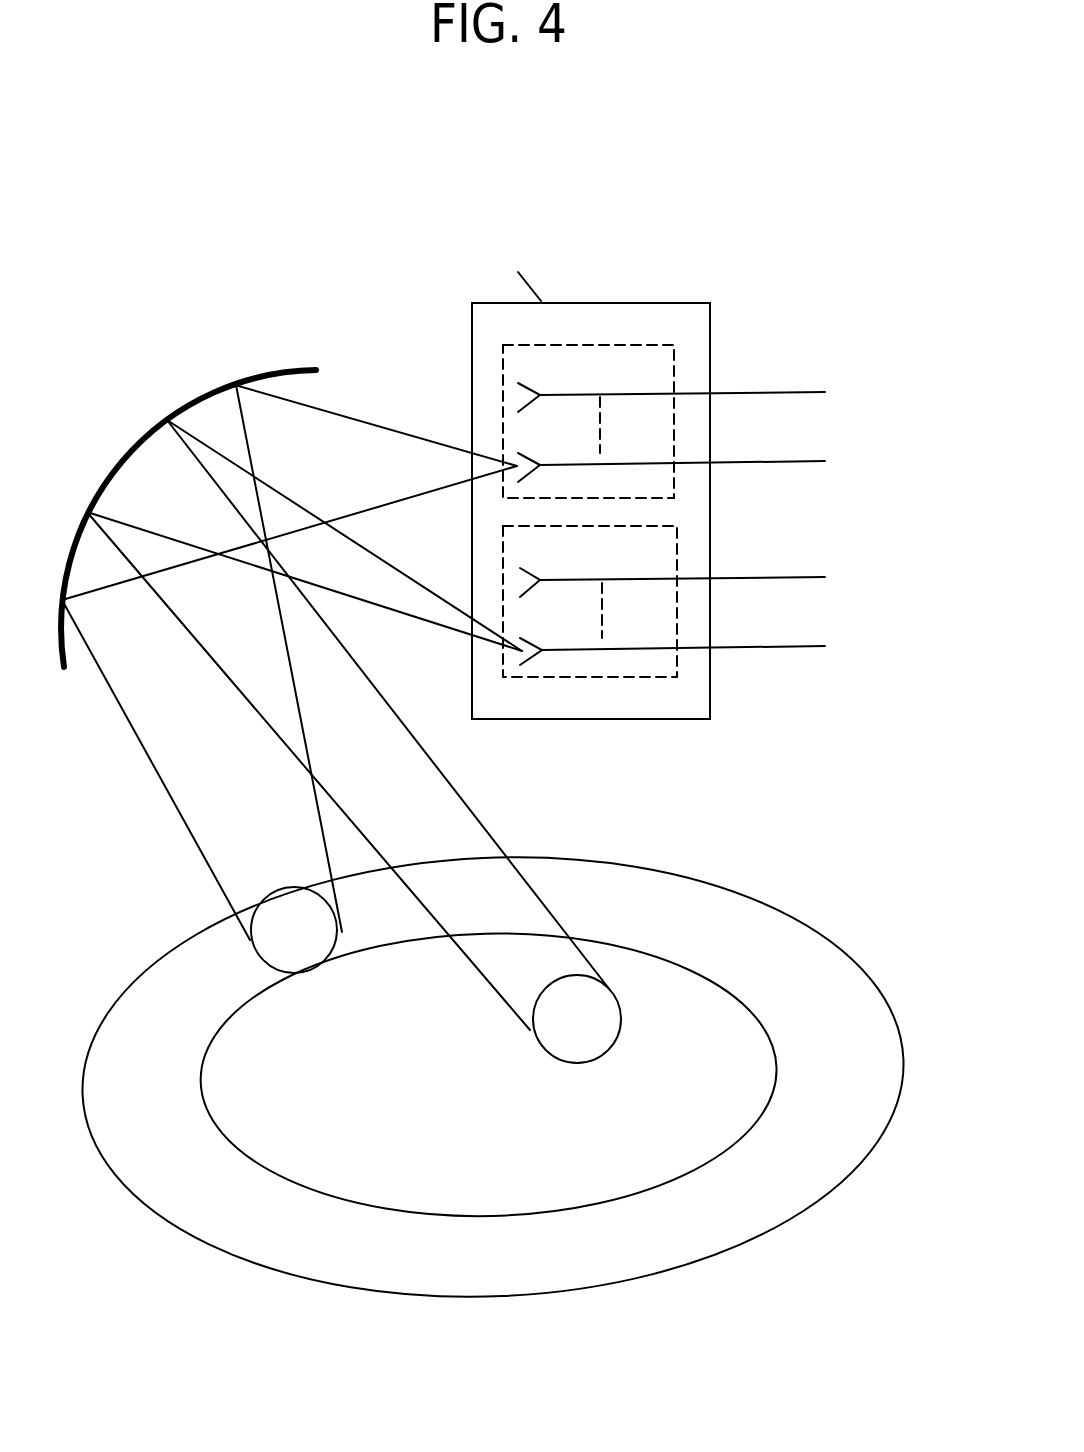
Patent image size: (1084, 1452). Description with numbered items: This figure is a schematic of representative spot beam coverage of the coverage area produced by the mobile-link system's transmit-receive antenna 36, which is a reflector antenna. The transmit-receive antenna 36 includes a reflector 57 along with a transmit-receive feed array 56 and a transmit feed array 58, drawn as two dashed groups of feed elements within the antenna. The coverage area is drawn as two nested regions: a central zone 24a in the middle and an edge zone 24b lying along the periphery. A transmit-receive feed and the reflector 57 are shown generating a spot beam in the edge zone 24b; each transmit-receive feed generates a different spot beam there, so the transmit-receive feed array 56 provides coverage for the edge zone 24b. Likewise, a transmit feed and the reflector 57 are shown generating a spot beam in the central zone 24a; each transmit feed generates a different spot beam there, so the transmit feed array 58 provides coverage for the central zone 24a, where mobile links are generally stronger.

The transmit-receive antenna 36 is at (472, 324).
The reflector 57 is at (165, 415).
The transmit-receive feed array 56 is at (674, 363).
The transmit feed array 58 is at (658, 677).
The central zone 24a is at (448, 1155).
The edge zone 24b is at (597, 1273).